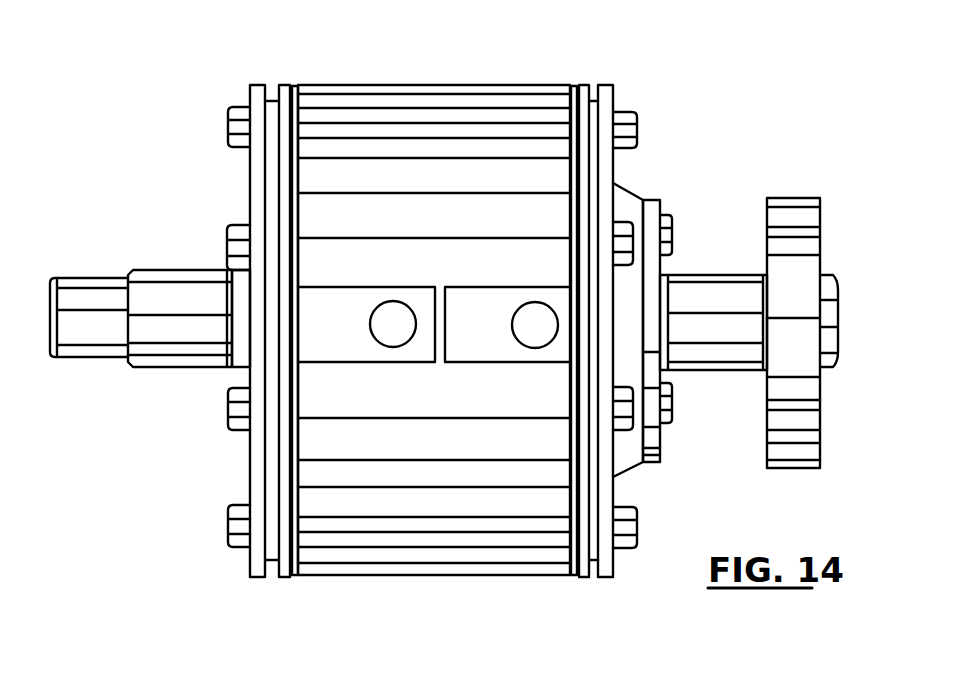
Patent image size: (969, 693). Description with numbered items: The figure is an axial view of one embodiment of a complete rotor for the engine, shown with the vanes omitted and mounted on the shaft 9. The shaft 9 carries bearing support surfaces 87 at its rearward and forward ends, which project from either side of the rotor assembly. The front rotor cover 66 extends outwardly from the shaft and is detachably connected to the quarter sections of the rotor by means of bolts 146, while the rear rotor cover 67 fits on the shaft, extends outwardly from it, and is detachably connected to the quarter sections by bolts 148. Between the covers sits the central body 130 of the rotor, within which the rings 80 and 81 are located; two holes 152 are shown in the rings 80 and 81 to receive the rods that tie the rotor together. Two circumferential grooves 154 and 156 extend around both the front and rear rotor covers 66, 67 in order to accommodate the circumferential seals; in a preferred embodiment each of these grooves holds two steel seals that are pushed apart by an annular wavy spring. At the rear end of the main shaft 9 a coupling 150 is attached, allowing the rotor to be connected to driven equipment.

The shaft 9 is at (85, 273).
The front rotor cover 66 is at (250, 176).
The rear rotor cover 67 is at (614, 167).
The ring 80 is at (505, 347).
The ring 81 is at (343, 347).
The bearing support surfaces 87 is at (167, 268).
The housing stack 130 is at (455, 113).
The bolts 146 is at (228, 128).
The bolts 148 is at (637, 120).
The coupling 150 is at (810, 243).
The holes 152 is at (522, 321).
The circumferential groove 154 is at (283, 86).
The circumferential groove 156 is at (294, 86).